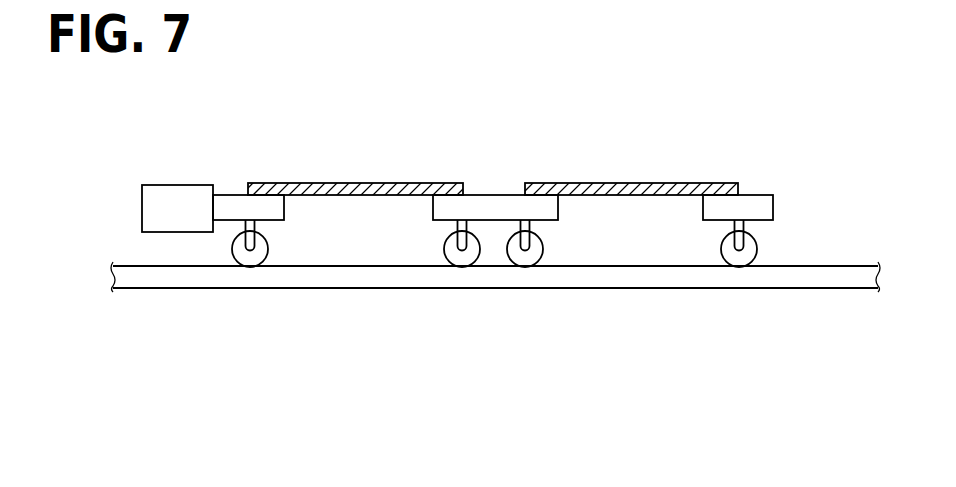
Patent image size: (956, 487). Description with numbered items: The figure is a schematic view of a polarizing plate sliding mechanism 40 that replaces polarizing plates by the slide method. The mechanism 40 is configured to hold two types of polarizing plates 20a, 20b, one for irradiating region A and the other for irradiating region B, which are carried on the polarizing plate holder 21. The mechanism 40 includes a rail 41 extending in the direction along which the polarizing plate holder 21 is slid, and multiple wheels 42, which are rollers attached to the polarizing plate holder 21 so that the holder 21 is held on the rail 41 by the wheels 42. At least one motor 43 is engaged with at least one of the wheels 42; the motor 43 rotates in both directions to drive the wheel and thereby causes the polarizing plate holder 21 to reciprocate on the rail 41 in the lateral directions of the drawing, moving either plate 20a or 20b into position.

The polarizing plate sliding mechanism 40 is at (495, 330).
The rail 41 is at (385, 278).
The wheels 42 is at (263, 258).
The motor 43 is at (173, 183).
The polarizing plate holder 21 is at (227, 193).
The polarizing plate 20a is at (357, 182).
The polarizing plate 20b is at (648, 182).